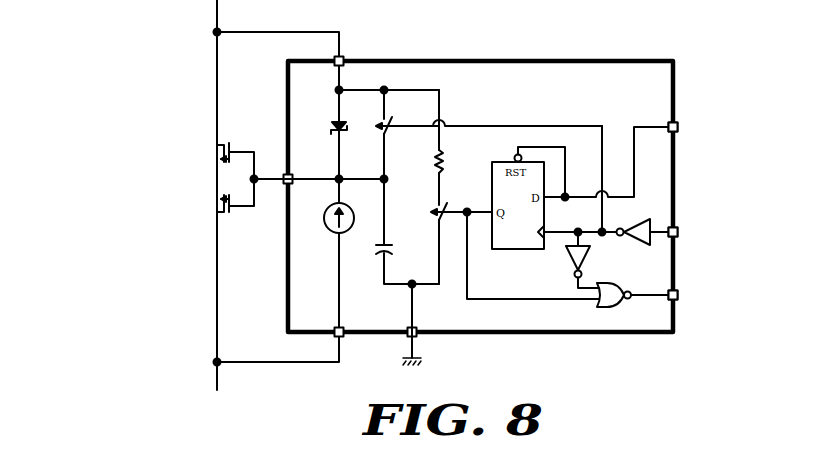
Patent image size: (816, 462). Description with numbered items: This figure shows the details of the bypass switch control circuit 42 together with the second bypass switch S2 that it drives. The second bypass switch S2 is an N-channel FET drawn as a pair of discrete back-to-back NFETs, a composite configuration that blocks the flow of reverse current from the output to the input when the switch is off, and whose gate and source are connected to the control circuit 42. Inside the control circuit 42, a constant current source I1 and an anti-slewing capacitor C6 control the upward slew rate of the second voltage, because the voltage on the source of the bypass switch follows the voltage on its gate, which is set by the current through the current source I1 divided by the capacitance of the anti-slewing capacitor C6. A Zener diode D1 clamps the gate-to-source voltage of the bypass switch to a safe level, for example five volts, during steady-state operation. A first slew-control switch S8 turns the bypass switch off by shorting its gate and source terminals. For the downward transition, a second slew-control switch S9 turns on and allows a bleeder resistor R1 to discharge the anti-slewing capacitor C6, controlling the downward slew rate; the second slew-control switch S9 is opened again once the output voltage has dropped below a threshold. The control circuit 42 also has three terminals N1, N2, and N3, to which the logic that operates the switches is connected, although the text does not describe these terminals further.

The bypass switch control circuit 42 is at (601, 52).
The second bypass switch S2 is at (227, 177).
The Zener diode D1 is at (329, 126).
The current source I1 is at (333, 218).
The first slew-control switch S8 is at (399, 125).
The second slew-control switch S9 is at (453, 211).
The bleeder resistor R1 is at (427, 161).
The anti-slewing capacitor C6 is at (375, 249).
The node N1 is at (686, 127).
The node N2 is at (686, 232).
The node N3 is at (686, 295).